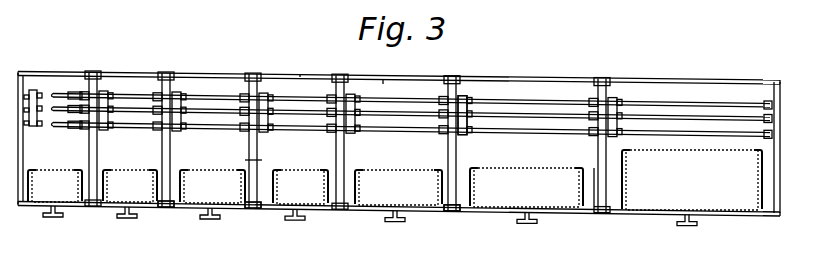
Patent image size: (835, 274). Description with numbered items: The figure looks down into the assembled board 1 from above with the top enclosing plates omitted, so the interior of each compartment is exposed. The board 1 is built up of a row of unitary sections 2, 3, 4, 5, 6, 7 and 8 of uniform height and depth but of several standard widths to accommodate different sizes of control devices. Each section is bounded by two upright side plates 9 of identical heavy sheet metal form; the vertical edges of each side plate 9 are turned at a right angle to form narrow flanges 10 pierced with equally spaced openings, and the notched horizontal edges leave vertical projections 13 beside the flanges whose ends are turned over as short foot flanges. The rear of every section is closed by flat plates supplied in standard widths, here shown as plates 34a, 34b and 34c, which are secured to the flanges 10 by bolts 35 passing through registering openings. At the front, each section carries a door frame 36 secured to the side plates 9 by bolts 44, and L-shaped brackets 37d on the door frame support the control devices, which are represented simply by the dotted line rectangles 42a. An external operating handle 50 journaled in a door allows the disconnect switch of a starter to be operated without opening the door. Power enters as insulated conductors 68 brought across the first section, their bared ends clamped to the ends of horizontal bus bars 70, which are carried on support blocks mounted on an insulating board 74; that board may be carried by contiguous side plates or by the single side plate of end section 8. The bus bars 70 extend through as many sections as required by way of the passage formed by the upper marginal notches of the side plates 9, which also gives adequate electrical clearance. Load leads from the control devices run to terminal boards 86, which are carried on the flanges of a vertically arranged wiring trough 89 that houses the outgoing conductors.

The board 1 is at (347, 217).
The section 2 is at (47, 76).
The section 3 is at (127, 77).
The section 4 is at (218, 80).
The section 5 is at (297, 78).
The section 6 is at (383, 83).
The section 7 is at (538, 87).
The section 8 is at (693, 88).
The side plate 9 is at (258, 162).
The flange 10 is at (593, 195).
The vertical projection 13 is at (455, 198).
The rear plate 34a is at (70, 70).
The rear plate 34b is at (362, 75).
The rear plate 34c is at (658, 79).
The bolt 35 is at (255, 74).
The door frame 36 is at (265, 212).
The L-shaped bracket 37d is at (303, 158).
The control device 42a is at (660, 195).
The bolt 44 is at (172, 209).
The operating handle 50 is at (50, 213).
The insulated conductor 68 is at (62, 98).
The horizontal bus bar 70 is at (217, 124).
The insulating board 74 is at (445, 147).
The terminal board 86 is at (106, 132).
The wiring trough 89 is at (25, 90).